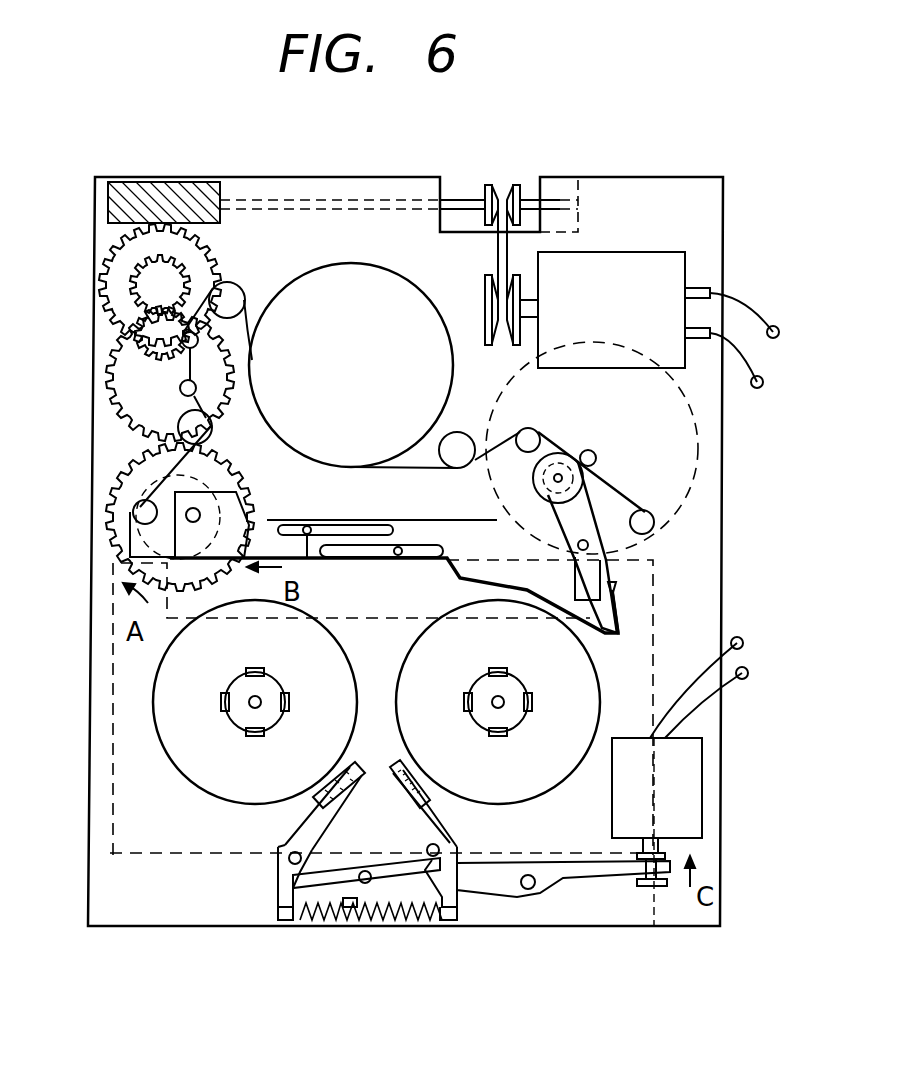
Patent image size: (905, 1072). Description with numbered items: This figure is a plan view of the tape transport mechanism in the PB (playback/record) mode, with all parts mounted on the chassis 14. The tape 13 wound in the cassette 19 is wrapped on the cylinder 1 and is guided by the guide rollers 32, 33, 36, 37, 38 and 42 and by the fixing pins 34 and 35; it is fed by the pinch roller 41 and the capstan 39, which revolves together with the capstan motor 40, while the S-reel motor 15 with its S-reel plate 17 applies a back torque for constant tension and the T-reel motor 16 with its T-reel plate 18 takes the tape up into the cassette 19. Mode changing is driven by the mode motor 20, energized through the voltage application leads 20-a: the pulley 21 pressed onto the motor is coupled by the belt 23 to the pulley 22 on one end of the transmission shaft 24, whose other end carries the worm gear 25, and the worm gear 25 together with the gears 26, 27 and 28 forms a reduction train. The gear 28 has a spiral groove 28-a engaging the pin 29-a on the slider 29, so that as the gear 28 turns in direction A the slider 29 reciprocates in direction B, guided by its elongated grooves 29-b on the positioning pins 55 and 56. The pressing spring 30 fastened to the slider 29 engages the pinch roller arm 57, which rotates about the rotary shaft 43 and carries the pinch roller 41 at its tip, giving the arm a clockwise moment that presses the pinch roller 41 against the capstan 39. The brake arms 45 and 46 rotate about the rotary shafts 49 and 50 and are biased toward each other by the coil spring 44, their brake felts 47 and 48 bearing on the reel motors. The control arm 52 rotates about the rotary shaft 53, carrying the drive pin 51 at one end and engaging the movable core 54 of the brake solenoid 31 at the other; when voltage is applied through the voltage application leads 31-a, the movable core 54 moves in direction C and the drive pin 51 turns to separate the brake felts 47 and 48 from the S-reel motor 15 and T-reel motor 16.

The cylinder 1 is at (337, 343).
The tape 13 is at (610, 484).
The chassis 14 is at (112, 908).
The S-reel motor 15 is at (182, 732).
The T-reel motor 16 is at (528, 770).
The S-reel plate 17 is at (240, 692).
The T-reel plate 18 is at (522, 702).
The cassette 19 is at (185, 838).
The mode motor 20 is at (675, 268).
The voltage application leads 20-a is at (745, 345).
The pulley 21 is at (484, 303).
The pulley 22 is at (487, 196).
The belt 23 is at (507, 258).
The transmission shaft 24 is at (315, 200).
The worm gear 25 is at (160, 188).
The gear 26 is at (145, 288).
The gear 27 is at (127, 390).
The gear 28 is at (152, 462).
The spiral groove 28-a is at (130, 535).
The slider 29 is at (262, 538).
The pin 29-a is at (198, 512).
The elongated grooves 29-b is at (347, 552).
The pressing spring 30 is at (615, 613).
The brake solenoid 31 is at (688, 808).
The voltage application leads 31-a is at (733, 695).
The guide roller 32 is at (140, 508).
The guide roller 33 is at (160, 425).
The fixing pin 34 is at (182, 386).
The fixing pin 35 is at (130, 335).
The guide roller 36 is at (230, 292).
The guide roller 37 is at (455, 438).
The guide roller 38 is at (530, 437).
The capstan 39 is at (594, 452).
The capstan motor 40 is at (686, 493).
The pinch roller 41 is at (545, 486).
The guide roller 42 is at (657, 522).
The rotary shaft 43 is at (603, 547).
The coil spring 44 is at (368, 890).
The brake arm 45 is at (283, 865).
The brake arm 46 is at (446, 905).
The brake felt 47 is at (316, 803).
The brake felt 48 is at (427, 798).
The rotary shaft 49 is at (310, 847).
The rotary shaft 50 is at (425, 847).
The drive pin 51 is at (368, 915).
The control arm 52 is at (488, 880).
The rotary shaft 53 is at (533, 890).
The movable core 54 is at (655, 888).
The positioning pin 55 is at (307, 540).
The positioning pin 56 is at (398, 556).
The pinch roller arm 57 is at (578, 515).